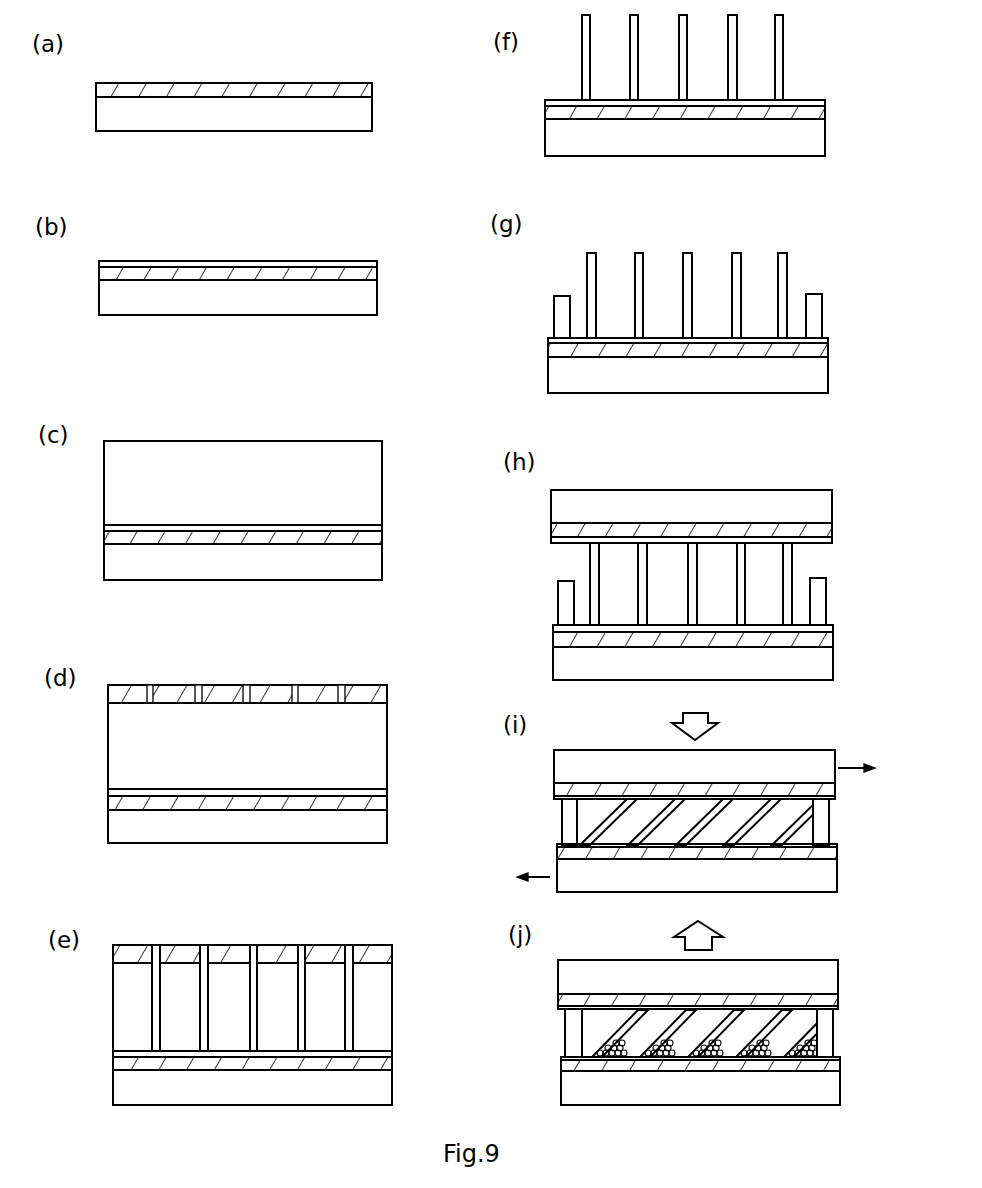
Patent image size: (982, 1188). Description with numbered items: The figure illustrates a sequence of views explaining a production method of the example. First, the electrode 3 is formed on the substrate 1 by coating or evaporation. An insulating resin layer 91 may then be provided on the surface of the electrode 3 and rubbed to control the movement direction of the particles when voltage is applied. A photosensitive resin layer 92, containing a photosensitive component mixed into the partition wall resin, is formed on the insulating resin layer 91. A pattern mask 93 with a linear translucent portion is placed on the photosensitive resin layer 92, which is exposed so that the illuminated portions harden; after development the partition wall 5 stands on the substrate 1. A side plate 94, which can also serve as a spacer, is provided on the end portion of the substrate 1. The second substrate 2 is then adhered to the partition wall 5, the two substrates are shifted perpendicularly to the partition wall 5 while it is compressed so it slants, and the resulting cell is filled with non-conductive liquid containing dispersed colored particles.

The substrate 1 is at (365, 116).
The second substrate 2 is at (817, 510).
The electrode 3 is at (373, 86).
The partition wall 5 is at (784, 41).
The insulating resin layer 91 is at (378, 258).
The photosensitive resin layer 92 is at (372, 482).
The pattern mask 93 is at (385, 689).
The side plate 94 is at (822, 310).